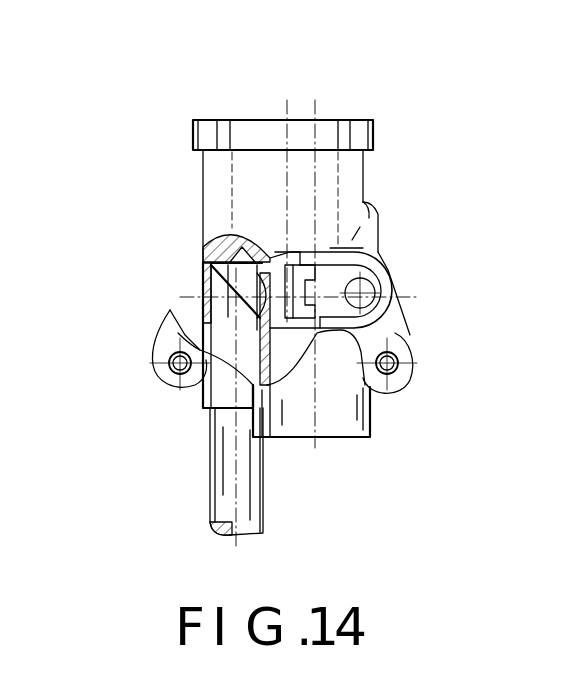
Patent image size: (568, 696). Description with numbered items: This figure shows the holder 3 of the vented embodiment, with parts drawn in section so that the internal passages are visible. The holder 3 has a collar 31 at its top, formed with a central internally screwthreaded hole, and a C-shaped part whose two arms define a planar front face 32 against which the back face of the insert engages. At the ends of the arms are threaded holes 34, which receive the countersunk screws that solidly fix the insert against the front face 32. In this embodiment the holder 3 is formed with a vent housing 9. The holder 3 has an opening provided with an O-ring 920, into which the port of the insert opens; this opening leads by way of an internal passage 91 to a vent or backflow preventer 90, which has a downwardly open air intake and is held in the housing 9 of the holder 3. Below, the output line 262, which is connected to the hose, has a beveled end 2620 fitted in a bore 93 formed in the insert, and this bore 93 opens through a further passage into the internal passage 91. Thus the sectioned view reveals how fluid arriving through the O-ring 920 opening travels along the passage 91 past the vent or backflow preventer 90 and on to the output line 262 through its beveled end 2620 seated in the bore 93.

The holder 3 is at (418, 154).
The collar 31 is at (380, 137).
The vent housing 9 is at (360, 412).
The vent or backflow preventer 90 is at (320, 290).
The internal passage 91 is at (380, 283).
The O-ring 920 is at (378, 252).
The bore 93 is at (203, 232).
The beveled end 2620 is at (203, 283).
The output line 262 is at (220, 500).
The planar front face 32 is at (177, 333).
The threaded holes 34 is at (165, 382).